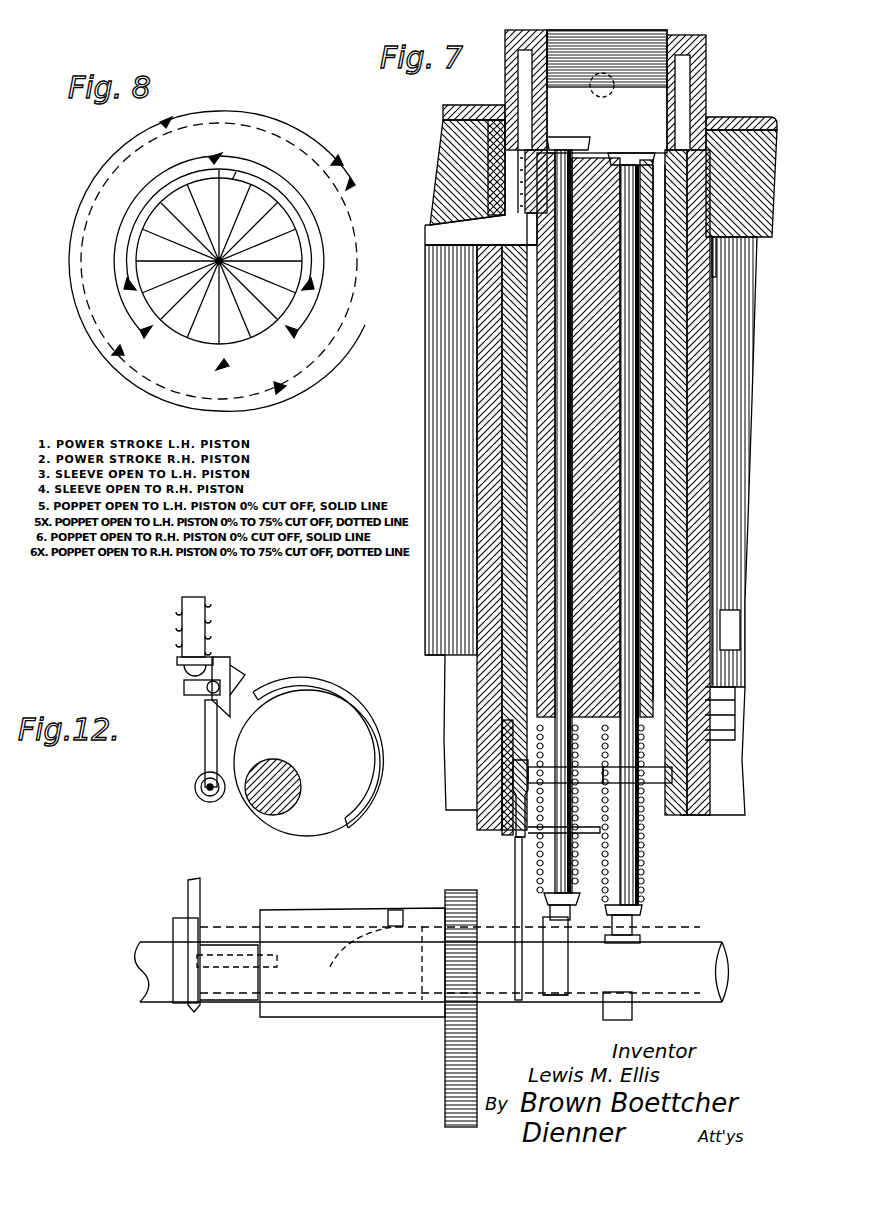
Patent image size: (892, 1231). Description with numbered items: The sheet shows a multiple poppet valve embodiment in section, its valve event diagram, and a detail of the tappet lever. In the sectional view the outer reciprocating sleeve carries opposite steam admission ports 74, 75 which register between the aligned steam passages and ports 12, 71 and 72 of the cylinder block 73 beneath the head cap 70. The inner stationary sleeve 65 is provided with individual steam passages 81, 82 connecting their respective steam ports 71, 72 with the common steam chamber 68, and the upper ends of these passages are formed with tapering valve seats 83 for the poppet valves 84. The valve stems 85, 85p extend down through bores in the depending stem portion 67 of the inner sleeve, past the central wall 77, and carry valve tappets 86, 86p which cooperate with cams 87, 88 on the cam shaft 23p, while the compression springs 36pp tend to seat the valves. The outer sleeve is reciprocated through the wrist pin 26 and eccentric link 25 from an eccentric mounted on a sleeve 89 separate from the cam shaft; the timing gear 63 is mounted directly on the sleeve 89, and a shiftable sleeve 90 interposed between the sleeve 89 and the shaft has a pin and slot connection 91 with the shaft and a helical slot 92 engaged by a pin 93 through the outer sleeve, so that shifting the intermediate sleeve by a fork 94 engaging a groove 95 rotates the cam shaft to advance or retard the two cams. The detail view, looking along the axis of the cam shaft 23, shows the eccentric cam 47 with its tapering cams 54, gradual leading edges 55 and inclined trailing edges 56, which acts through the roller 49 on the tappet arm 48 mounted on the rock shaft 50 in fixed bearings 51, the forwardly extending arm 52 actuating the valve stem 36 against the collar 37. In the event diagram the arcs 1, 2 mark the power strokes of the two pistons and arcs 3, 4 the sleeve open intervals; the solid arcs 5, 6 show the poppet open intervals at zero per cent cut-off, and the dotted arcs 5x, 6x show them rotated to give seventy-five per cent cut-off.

In FIG. 8, the power stroke L.H. piston arc 1 is at (213, 256).
In FIG. 8, the power stroke R.H. piston arc 2 is at (270, 237).
In FIG. 8, the sleeve open to L.H. piston arc 3 is at (163, 245).
In FIG. 8, the sleeve open to R.H. piston arc 4 is at (279, 263).
In FIG. 8, the arc of poppet open interval 5 is at (217, 261).
In FIG. 8, the arc of poppet open interval 6 is at (88, 333).
In FIG. 8, the dotted arc 5x is at (219, 261).
In FIG. 8, the dotted arc 6x is at (365, 302).
In FIG. 12, the eccentric cam 47 is at (307, 763).
In FIG. 12, the cam shaft 23 is at (300, 783).
In FIG. 12, the leading edges 55 is at (320, 695).
In FIG. 12, the tapering cams 54 is at (352, 700).
In FIG. 12, the trailing edges 56 is at (257, 704).
In FIG. 12, the tappet arm 48 is at (208, 720).
In FIG. 12, the roller 49 is at (200, 800).
In FIG. 12, the compression spring 36 is at (179, 612).
In FIG. 12, the collar 37 is at (215, 648).
In FIG. 12, the forwardly extending arm 52 is at (182, 687).
In FIG. 12, the fixed bearings 51 is at (231, 685).
In FIG. 12, the rock shaft 50 is at (222, 665).
In FIG. 7, the cylinder head cap 70 is at (520, 112).
In FIG. 7, the common steam chamber 68 is at (607, 91).
In FIG. 7, the steam passage 82 is at (705, 140).
In FIG. 7, the cylinder block 73 is at (700, 215).
In FIG. 7, the inner stationary sleeve 65 is at (540, 345).
In FIG. 7, the steam admission port 74 is at (520, 250).
In FIG. 7, the steam passage 12 is at (500, 228).
In FIG. 7, the steam passage 81 is at (505, 170).
In FIG. 7, the steam port 71 is at (540, 202).
In FIG. 7, the valve stem 85 is at (563, 434).
In FIG. 7, the poppet valve 84 is at (575, 137).
In FIG. 7, the central wall 77 is at (680, 398).
In FIG. 7, the tapering valve seat 83 is at (640, 165).
In FIG. 7, the valve stem 85p is at (628, 502).
In FIG. 7, the depending stem portion 67 is at (645, 590).
In FIG. 7, the steam port 72 is at (710, 268).
In FIG. 7, the steam admission port 75 is at (712, 255).
In FIG. 7, the compression springs 36pp is at (615, 868).
In FIG. 7, the wrist pin 26 is at (665, 782).
In FIG. 7, the eccentric link 25 is at (516, 815).
In FIG. 7, the cam shaft 23p is at (703, 942).
In FIG. 7, the sleeve 89 is at (435, 910).
In FIG. 7, the pin 93 is at (392, 910).
In FIG. 7, the helical slot 92 is at (352, 960).
In FIG. 7, the pin and slot connection 91 is at (240, 962).
In FIG. 7, the groove 95 is at (185, 905).
In FIG. 7, the shifting fork 94 is at (205, 890).
In FIG. 7, the shiftable sleeve 90 is at (228, 1005).
In FIG. 7, the timing gear 63 is at (447, 1050).
In FIG. 7, the valve tappet 86 is at (562, 940).
In FIG. 7, the valve tappet 86p is at (640, 940).
In FIG. 7, the cam 87 is at (555, 995).
In FIG. 7, the cam 88 is at (628, 1020).